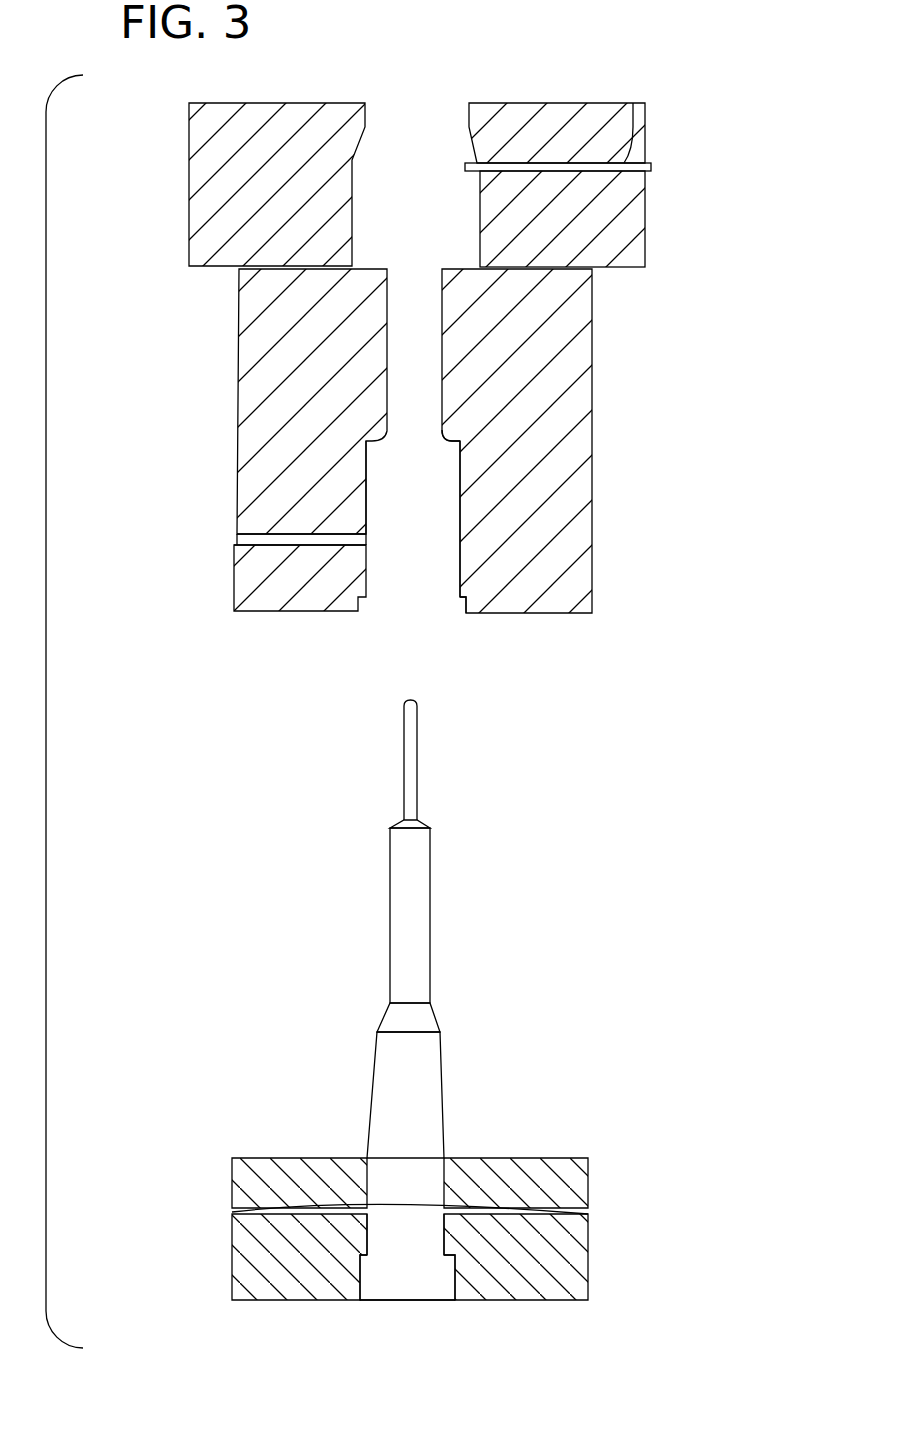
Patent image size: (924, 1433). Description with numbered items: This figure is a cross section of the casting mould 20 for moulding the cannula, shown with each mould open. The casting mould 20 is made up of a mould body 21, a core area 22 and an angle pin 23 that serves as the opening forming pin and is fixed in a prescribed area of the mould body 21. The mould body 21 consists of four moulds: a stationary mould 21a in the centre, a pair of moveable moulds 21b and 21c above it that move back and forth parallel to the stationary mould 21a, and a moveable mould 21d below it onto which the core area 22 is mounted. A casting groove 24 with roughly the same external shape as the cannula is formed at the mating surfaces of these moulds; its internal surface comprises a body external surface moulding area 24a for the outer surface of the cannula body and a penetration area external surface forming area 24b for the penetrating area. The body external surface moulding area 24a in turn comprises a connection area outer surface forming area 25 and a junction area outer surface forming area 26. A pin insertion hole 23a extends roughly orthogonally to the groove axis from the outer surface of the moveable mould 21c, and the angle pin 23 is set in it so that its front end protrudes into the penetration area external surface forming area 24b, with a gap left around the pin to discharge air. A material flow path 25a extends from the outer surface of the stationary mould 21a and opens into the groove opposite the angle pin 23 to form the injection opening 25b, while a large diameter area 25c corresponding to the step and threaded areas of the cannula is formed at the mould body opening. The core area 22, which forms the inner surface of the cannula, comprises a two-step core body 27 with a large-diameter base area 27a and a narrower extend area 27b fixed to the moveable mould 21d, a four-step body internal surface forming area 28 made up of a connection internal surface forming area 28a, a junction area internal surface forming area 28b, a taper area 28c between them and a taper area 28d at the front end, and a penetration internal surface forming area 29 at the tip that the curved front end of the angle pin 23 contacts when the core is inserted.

The casting mould 20 is at (753, 62).
The mould body 21 is at (677, 104).
The stationary mould 21a is at (238, 405).
The moveable mould 21b is at (347, 118).
The moveable mould 21c is at (535, 118).
The moveable mould 21d is at (585, 1185).
The core area 22 is at (352, 836).
The angle pin 23 is at (466, 165).
The pin insertion hole 23a is at (633, 104).
The casting groove 24 is at (383, 625).
The body external surface moulding area 24a is at (413, 519).
The penetration area external surface forming area 24b is at (478, 222).
The connection area outer surface forming area 25 is at (445, 496).
The material flow path 25a is at (240, 541).
The injection opening 25b is at (367, 537).
The large diameter area 25c is at (460, 602).
The junction area outer surface forming area 26 is at (441, 428).
The core body 27 is at (650, 1222).
The base area 27a is at (455, 1276).
The extend area 27b is at (432, 1239).
The body internal surface forming area 28 is at (457, 929).
The connection internal surface forming area 28a is at (433, 1090).
The junction area internal surface forming area 28b is at (428, 924).
The taper area 28c is at (432, 1020).
The taper area 28d is at (418, 824).
The penetration internal surface forming area 29 is at (416, 767).